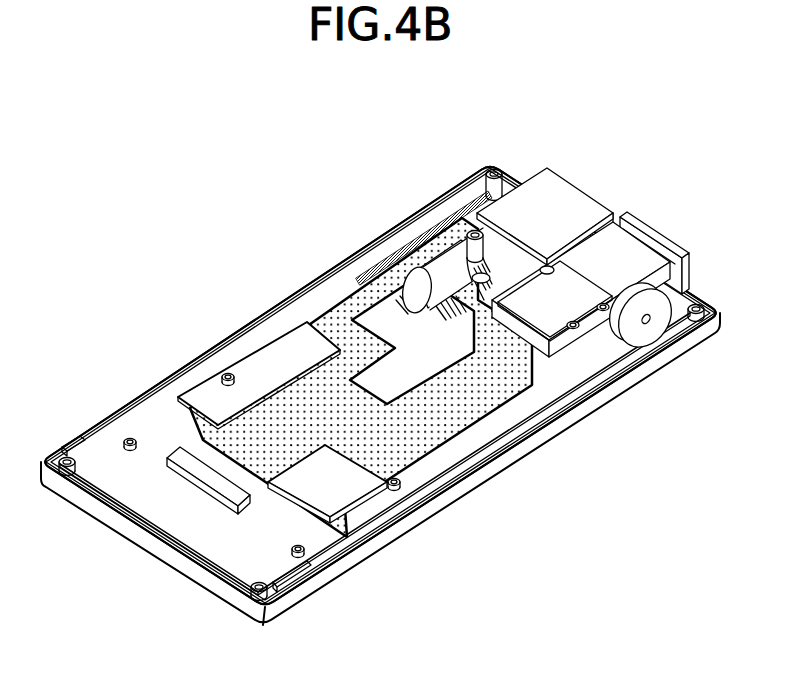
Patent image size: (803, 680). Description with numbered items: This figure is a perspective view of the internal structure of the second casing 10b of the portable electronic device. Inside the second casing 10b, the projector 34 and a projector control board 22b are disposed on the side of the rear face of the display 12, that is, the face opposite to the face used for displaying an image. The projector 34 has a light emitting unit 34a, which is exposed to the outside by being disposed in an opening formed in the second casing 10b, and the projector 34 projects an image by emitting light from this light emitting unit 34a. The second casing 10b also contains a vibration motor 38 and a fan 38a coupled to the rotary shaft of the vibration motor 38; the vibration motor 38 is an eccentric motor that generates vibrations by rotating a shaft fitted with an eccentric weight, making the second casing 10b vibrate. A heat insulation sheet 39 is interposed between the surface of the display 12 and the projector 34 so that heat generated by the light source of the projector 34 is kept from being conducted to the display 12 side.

The second casing 10b is at (505, 148).
The display 12 is at (627, 393).
The projector control board 22b is at (168, 500).
The projector 34 is at (698, 258).
The light emitting unit 34a is at (657, 246).
The vibration motor 38 is at (437, 281).
The fan 38a is at (479, 252).
The heat insulation sheet 39 is at (428, 332).